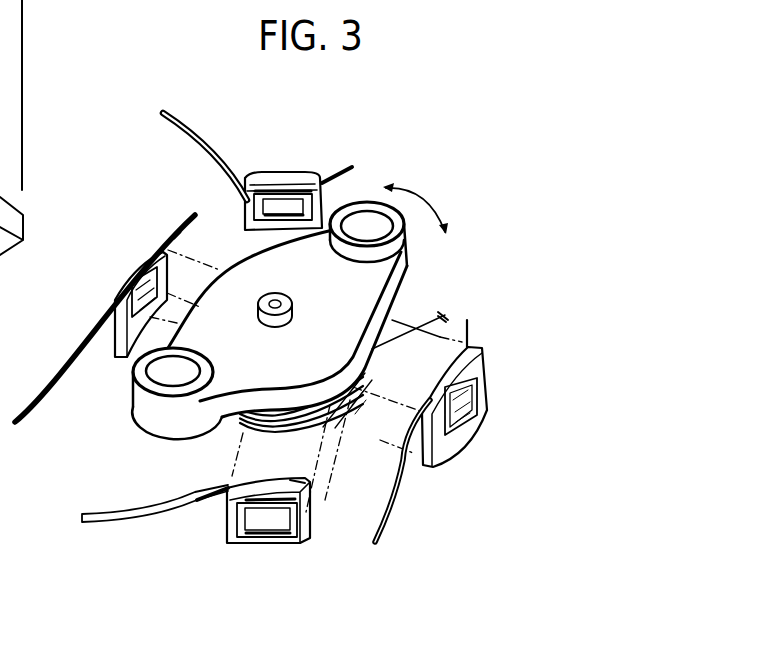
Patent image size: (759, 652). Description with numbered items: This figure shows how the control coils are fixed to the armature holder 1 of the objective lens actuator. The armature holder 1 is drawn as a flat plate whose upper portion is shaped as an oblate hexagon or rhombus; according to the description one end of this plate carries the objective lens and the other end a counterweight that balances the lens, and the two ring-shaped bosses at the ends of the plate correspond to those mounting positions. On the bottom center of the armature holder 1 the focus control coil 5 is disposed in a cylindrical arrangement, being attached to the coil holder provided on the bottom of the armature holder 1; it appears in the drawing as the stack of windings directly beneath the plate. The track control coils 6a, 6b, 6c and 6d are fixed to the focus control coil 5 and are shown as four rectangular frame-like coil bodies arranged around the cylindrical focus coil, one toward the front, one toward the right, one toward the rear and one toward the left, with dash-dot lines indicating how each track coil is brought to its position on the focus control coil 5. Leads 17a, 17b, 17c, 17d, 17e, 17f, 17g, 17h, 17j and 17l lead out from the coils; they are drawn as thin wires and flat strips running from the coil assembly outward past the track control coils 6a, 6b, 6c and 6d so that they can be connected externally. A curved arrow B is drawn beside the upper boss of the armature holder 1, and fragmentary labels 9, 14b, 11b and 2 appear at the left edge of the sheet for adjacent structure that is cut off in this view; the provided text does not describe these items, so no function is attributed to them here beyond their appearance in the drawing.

The armature holder 1 is at (236, 280).
The focus control coil 5 is at (340, 425).
The track control coil 6a is at (250, 540).
The track control coil 6b is at (448, 458).
The track control coil 6c is at (295, 172).
The track control coil 6d is at (125, 278).
The lead 17a is at (443, 317).
The lead 17b is at (440, 318).
The lead 17c is at (108, 512).
The lead 17d is at (300, 474).
The lead 17e is at (392, 520).
The lead 17f is at (473, 331).
The lead 17g is at (337, 168).
The lead 17h is at (203, 144).
The lead 17j is at (62, 379).
The lead 17l is at (177, 236).
The base member 9 is at (23, 230).
The support member 14b is at (0, 592).
The support member 11b is at (26, 648).
The housing 2 is at (2, 502).
The rotation direction arrow B is at (428, 194).